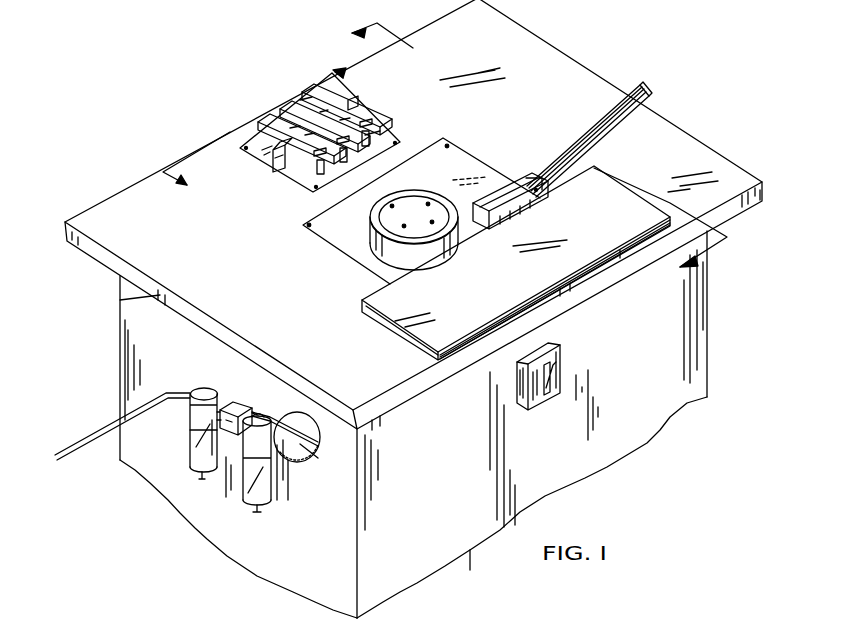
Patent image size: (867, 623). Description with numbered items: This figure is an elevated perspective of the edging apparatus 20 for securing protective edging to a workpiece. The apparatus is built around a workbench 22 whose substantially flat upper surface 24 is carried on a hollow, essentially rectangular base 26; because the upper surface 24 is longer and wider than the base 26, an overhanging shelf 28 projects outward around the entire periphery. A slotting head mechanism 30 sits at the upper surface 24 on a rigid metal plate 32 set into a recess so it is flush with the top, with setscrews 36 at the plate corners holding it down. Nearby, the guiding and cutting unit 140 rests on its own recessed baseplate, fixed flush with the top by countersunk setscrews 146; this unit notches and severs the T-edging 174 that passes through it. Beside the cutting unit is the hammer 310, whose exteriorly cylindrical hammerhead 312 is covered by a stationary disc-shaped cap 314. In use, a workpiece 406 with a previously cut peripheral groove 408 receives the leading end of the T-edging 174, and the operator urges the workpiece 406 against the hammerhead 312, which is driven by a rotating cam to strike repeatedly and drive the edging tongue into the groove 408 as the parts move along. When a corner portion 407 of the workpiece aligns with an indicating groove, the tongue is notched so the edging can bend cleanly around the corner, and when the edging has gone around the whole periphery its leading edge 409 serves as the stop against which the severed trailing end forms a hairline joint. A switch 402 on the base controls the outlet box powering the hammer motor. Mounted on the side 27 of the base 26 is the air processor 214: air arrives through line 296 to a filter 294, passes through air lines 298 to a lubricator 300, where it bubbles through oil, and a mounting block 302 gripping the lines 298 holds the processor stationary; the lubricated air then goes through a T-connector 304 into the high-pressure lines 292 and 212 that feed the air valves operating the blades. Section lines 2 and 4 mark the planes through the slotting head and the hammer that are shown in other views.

The edging apparatus 20 is at (210, 120).
The workbench 22 is at (556, 42).
The upper surface 24 is at (672, 150).
The base 26 is at (690, 372).
The side 27 is at (208, 517).
The overhanging shelf 28 is at (742, 218).
The slotting head mechanism 30 is at (305, 88).
The rigid metal plate 32 is at (297, 173).
The setscrews 36 is at (243, 149).
The guiding and cutting unit 140 is at (508, 195).
The countersunk setscrews 146 is at (460, 586).
The T-edging 174 is at (572, 143).
The high-pressure line 212 is at (318, 458).
The air processor 214 is at (195, 388).
The high-pressure line 292 is at (282, 410).
The filter 294 is at (205, 430).
The air line 296 is at (100, 455).
The air lines 298 is at (223, 442).
The lubricator 300 is at (273, 500).
The mounting block 302 is at (238, 402).
The T-connector 304 is at (265, 445).
The hammer 310 is at (432, 178).
The hammerhead 312 is at (370, 250).
The cap 314 is at (405, 200).
The switch 402 is at (540, 413).
The workpiece 406 is at (516, 263).
The corner portion 407 is at (593, 173).
The peripheral groove 408 is at (645, 238).
The leading edge 409 is at (588, 278).
The section line 2- 2 is at (266, 134).
The section line 4- 4 is at (530, 152).